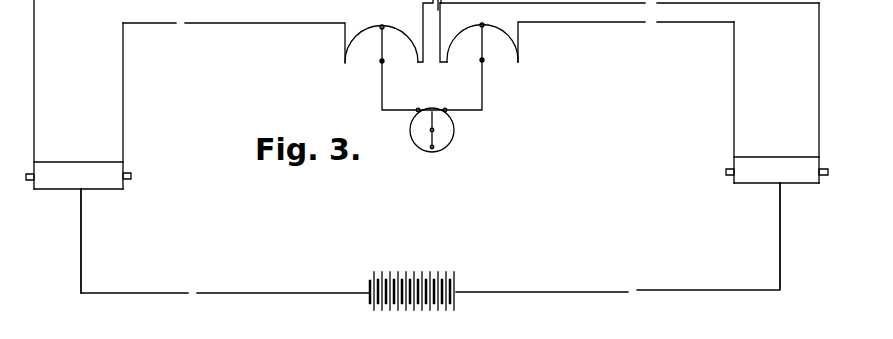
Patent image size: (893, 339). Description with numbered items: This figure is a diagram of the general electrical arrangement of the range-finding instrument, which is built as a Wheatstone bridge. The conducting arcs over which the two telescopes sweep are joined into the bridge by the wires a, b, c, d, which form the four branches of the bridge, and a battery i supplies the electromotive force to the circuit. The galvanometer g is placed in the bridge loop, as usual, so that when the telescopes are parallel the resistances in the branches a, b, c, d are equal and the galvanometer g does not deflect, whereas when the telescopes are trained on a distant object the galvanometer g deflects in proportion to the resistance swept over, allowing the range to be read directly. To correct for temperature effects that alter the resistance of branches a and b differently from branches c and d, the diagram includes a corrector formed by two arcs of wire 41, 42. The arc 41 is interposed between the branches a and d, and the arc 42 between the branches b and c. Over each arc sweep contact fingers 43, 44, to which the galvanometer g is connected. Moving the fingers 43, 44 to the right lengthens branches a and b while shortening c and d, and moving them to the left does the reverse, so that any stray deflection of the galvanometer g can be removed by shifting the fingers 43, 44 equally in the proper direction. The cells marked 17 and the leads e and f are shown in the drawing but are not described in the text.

The electrolytic cell 17 is at (427, 161).
The arc of wire 41 is at (482, 33).
The arc of wire 42 is at (381, 44).
The contact finger 43 is at (483, 48).
The contact finger 44 is at (383, 49).
The bridge branch wire a is at (42, 94).
The bridge branch wire b is at (130, 106).
The bridge branch wire c is at (810, 93).
The bridge branch wire d is at (743, 102).
The left cell lead wire e is at (88, 241).
The right cell lead wire f is at (787, 236).
The galvanometer g is at (441, 135).
The battery i is at (453, 280).